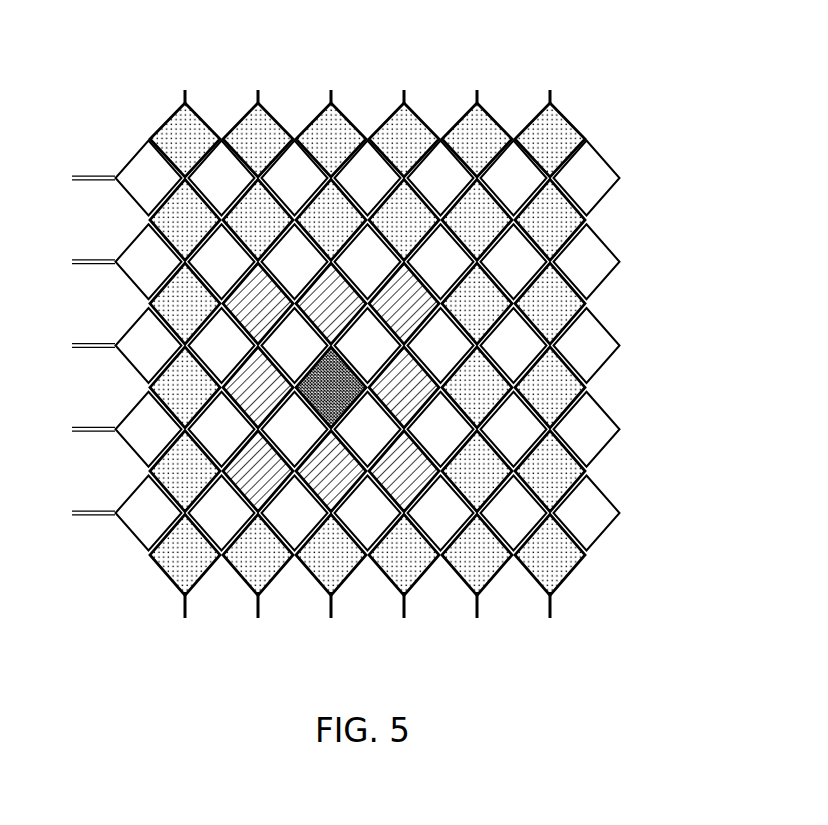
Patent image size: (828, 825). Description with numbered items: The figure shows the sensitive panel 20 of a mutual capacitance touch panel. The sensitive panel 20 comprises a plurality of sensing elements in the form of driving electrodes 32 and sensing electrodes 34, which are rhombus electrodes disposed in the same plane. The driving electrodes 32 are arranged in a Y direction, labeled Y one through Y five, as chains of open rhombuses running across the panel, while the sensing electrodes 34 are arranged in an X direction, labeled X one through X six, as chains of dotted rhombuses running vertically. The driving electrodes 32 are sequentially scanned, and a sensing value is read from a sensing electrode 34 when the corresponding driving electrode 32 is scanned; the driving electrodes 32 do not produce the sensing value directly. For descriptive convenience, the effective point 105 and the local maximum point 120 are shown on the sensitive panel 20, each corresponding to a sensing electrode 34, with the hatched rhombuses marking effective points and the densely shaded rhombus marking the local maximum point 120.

The sensitive panel 20 is at (88, 56).
The effective point 105 is at (423, 290).
The local maximum point 120 is at (333, 390).
The driving electrode 32 is at (590, 518).
The sensing electrode 34 is at (553, 560).